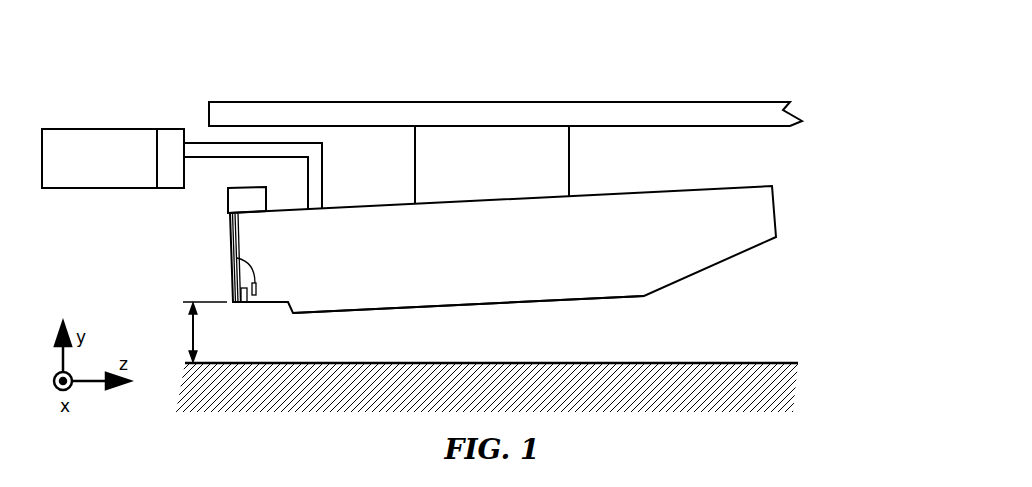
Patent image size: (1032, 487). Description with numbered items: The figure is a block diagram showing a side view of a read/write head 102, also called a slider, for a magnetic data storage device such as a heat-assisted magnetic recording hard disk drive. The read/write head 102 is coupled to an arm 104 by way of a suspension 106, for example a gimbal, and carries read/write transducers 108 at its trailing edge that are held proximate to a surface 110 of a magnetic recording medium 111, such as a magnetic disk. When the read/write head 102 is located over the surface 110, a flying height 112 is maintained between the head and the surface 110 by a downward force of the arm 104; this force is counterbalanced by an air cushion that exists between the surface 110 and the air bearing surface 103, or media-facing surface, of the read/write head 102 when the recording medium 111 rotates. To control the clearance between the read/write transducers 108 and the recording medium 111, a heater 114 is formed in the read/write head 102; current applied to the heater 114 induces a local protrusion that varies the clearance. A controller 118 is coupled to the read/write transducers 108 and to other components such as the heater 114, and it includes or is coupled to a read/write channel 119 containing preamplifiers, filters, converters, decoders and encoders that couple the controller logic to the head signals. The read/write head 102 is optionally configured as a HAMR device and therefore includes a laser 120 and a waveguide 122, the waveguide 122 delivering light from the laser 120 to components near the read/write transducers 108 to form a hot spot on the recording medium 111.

The read/write head 102 is at (682, 196).
The air bearing surface 103 is at (377, 313).
The arm 104 is at (727, 107).
The suspension 106 is at (569, 157).
The read/write transducers 108 is at (233, 282).
The surface 110 is at (683, 363).
The magnetic recording medium 111 is at (697, 400).
The flying height 112 is at (190, 332).
The heater 114 is at (233, 262).
The controller 118 is at (95, 128).
The read/write channel 119 is at (167, 128).
The laser 120 is at (247, 195).
The waveguide 122 is at (232, 232).